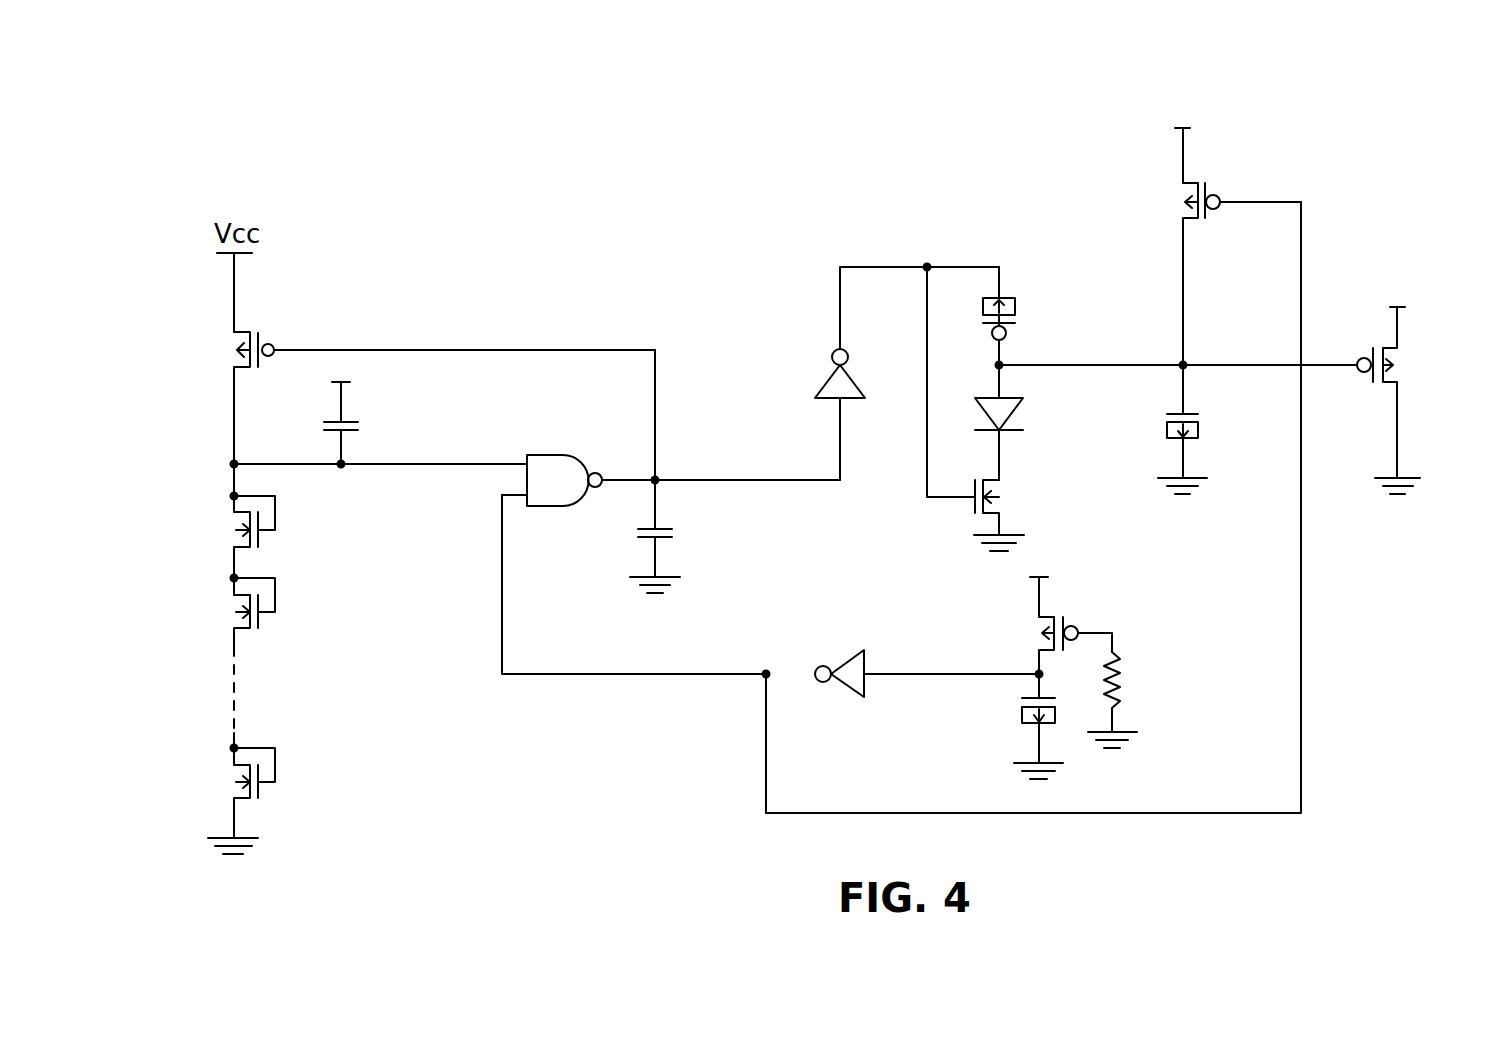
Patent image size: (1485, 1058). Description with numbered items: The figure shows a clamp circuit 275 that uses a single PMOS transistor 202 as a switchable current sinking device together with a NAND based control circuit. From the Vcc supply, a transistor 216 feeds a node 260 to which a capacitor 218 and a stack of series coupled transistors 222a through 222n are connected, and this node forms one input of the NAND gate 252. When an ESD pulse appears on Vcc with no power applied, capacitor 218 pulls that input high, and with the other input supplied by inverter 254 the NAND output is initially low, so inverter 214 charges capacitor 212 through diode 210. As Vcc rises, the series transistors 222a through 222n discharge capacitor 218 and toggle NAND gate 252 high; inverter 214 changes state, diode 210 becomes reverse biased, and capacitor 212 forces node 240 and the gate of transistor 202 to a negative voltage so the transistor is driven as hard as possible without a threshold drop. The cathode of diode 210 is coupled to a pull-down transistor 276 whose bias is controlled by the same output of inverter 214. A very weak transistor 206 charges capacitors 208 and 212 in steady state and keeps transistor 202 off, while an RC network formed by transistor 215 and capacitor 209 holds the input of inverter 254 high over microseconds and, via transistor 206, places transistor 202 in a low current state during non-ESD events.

The PMOS transistor 202 is at (1405, 357).
The transistor 206 is at (1180, 210).
The capacitor 208 is at (1205, 429).
The capacitor 209 is at (1022, 717).
The diode 210 is at (1018, 414).
The capacitor 212 is at (1022, 311).
The inverter 214 is at (827, 381).
The transistor 215 is at (1035, 633).
The transistor 216 is at (230, 355).
The capacitor 218 is at (332, 425).
The series coupled transistor 222a is at (230, 523).
The series coupled transistor 222n is at (230, 775).
The node 240 is at (1126, 363).
The NAND gate 252 is at (535, 455).
The inverter 254 is at (842, 698).
The node 260 is at (444, 462).
The clamp circuit 275 is at (1352, 603).
The pull-down transistor 276 is at (1005, 506).